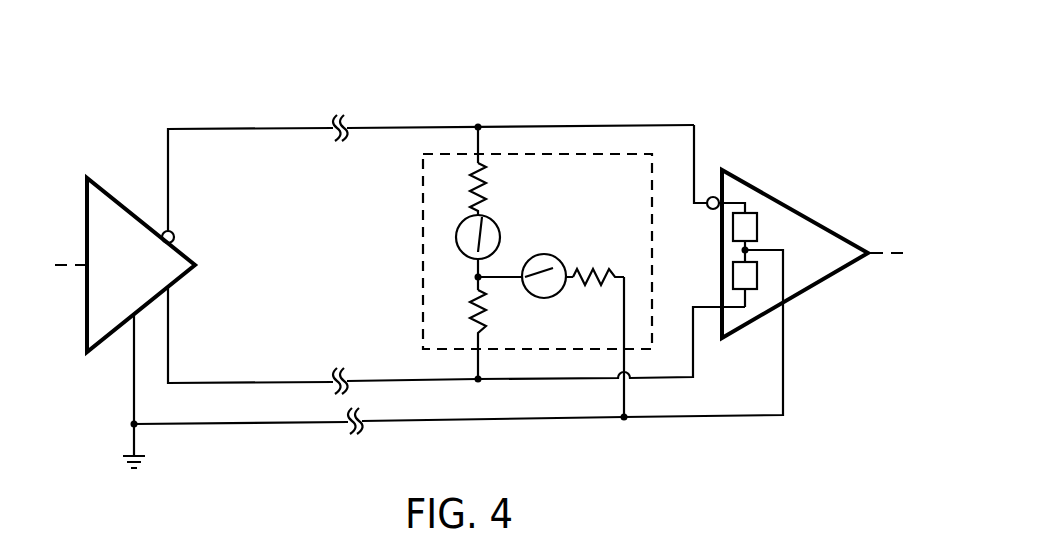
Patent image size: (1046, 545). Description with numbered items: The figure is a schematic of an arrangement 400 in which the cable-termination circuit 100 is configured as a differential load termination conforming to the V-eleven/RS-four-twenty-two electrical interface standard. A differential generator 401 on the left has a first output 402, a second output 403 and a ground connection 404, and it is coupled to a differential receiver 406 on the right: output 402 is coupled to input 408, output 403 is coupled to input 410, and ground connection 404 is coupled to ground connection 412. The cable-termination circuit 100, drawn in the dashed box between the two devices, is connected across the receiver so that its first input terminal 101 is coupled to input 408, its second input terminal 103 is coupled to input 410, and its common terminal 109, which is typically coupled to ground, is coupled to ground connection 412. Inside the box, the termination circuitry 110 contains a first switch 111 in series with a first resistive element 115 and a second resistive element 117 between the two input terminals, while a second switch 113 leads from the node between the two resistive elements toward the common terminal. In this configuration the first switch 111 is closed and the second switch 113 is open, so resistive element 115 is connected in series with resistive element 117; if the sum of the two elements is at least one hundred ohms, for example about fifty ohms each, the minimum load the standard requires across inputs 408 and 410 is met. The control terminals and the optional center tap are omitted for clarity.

The sensor circuit 400 is at (568, 89).
The V.11/RS-422 differential generator 401 is at (117, 201).
The output 402 is at (168, 195).
The output 403 is at (168, 311).
The ground connection 404 is at (134, 398).
The cable-termination circuit 100 is at (413, 192).
The termination circuitry 110 is at (423, 301).
The first input terminal 101 is at (478, 127).
The second input terminal 103 is at (481, 382).
The common terminal 109 is at (624, 422).
The first switch 111 is at (500, 238).
The second switch 113 is at (556, 259).
The first resistive element 115 is at (487, 179).
The second resistive element 117 is at (484, 328).
The V.11/RS-422 differential receiver 406 is at (830, 231).
The input 408 is at (694, 140).
The input 410 is at (693, 365).
The ground connection 412 is at (783, 372).